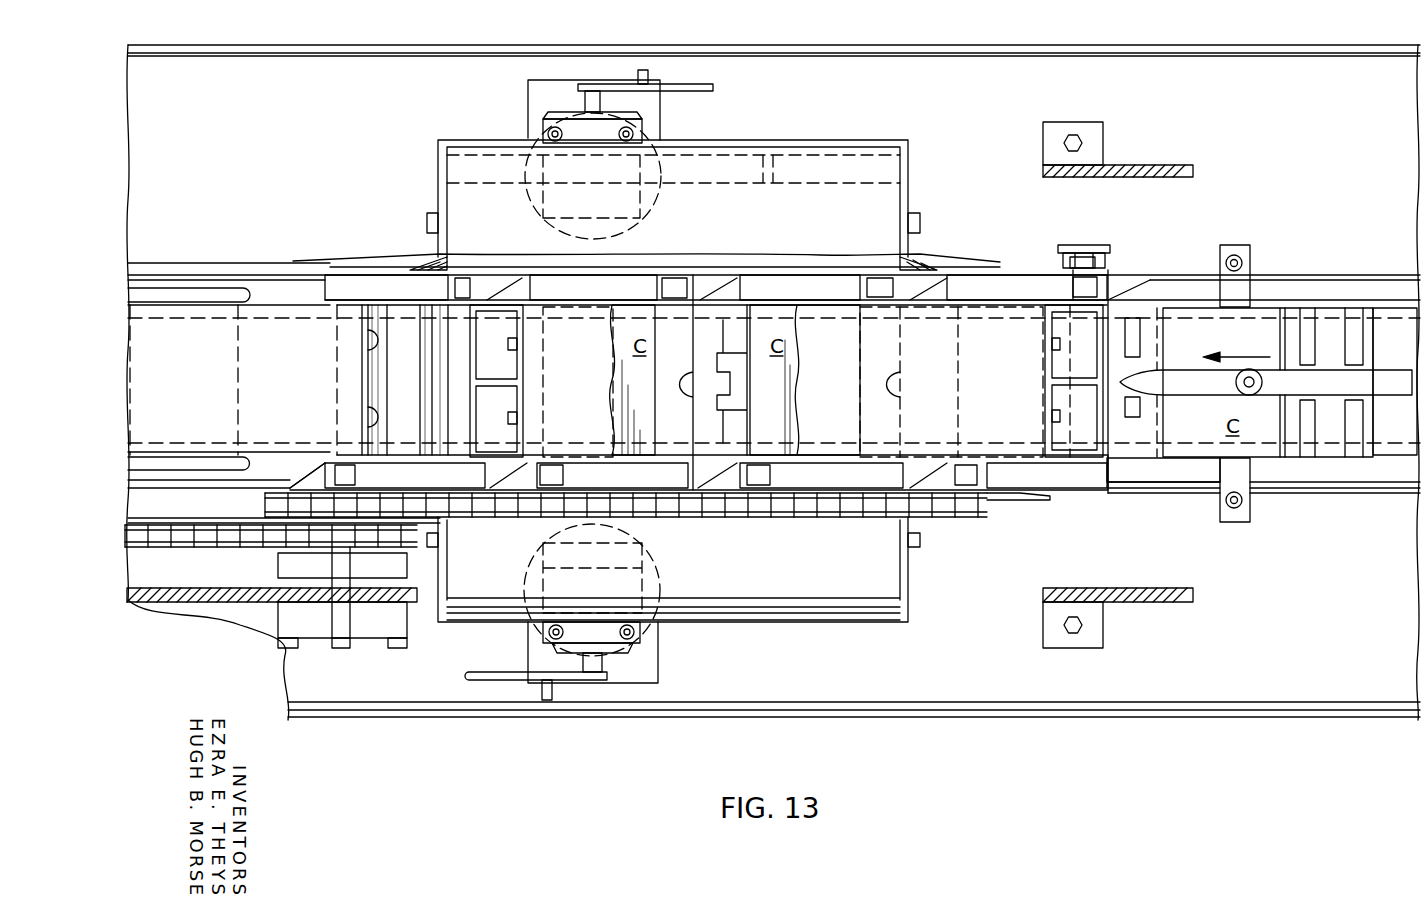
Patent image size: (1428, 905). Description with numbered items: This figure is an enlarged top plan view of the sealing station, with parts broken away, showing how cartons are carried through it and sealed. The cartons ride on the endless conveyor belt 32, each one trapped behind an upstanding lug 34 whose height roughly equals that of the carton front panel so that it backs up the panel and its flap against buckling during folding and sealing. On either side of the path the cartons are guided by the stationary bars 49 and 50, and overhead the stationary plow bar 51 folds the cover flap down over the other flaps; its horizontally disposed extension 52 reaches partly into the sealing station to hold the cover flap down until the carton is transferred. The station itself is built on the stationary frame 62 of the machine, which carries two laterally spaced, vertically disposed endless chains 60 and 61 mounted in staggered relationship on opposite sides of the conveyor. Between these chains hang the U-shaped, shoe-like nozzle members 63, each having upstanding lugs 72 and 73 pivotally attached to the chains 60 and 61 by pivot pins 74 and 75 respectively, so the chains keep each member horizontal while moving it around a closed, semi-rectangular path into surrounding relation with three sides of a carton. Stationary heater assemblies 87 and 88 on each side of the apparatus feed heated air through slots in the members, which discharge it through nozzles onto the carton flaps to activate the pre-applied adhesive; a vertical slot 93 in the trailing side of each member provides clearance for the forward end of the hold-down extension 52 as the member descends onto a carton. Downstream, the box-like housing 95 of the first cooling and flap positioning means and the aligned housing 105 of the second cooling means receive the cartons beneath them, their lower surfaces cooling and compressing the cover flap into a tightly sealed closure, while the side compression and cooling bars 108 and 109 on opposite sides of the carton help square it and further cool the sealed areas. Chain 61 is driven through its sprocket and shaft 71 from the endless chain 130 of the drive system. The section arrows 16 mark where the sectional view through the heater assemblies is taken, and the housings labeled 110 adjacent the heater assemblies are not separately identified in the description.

The section line 16- 16 is at (625, 28).
The endless conveyor belt 32 is at (705, 421).
The lug 34 is at (1283, 337).
The stationary bar 49 is at (1272, 290).
The stationary bar 50 is at (1300, 473).
The plow bar 51 is at (1392, 400).
The extension 52 is at (1185, 390).
The endless chain 60 is at (1112, 256).
The endless chain 61 is at (790, 508).
The stationary frame 62 is at (1300, 153).
The nozzle means 63 is at (307, 471).
The shaft 71 is at (332, 547).
The lug 72 is at (1072, 283).
The lug 73 is at (982, 478).
The pivot pin 74 is at (1085, 262).
The pivot pin 75 is at (965, 496).
The heater assembly 87 is at (664, 630).
The heater assembly 88 is at (668, 136).
The slot 93 is at (1088, 388).
The housing 95 is at (591, 356).
The housing 105 is at (308, 356).
The side compression and cooling bar 108 is at (143, 462).
The side compression and cooling bar 109 is at (150, 296).
The housing 110 is at (782, 160).
The endless chain 130 is at (150, 540).